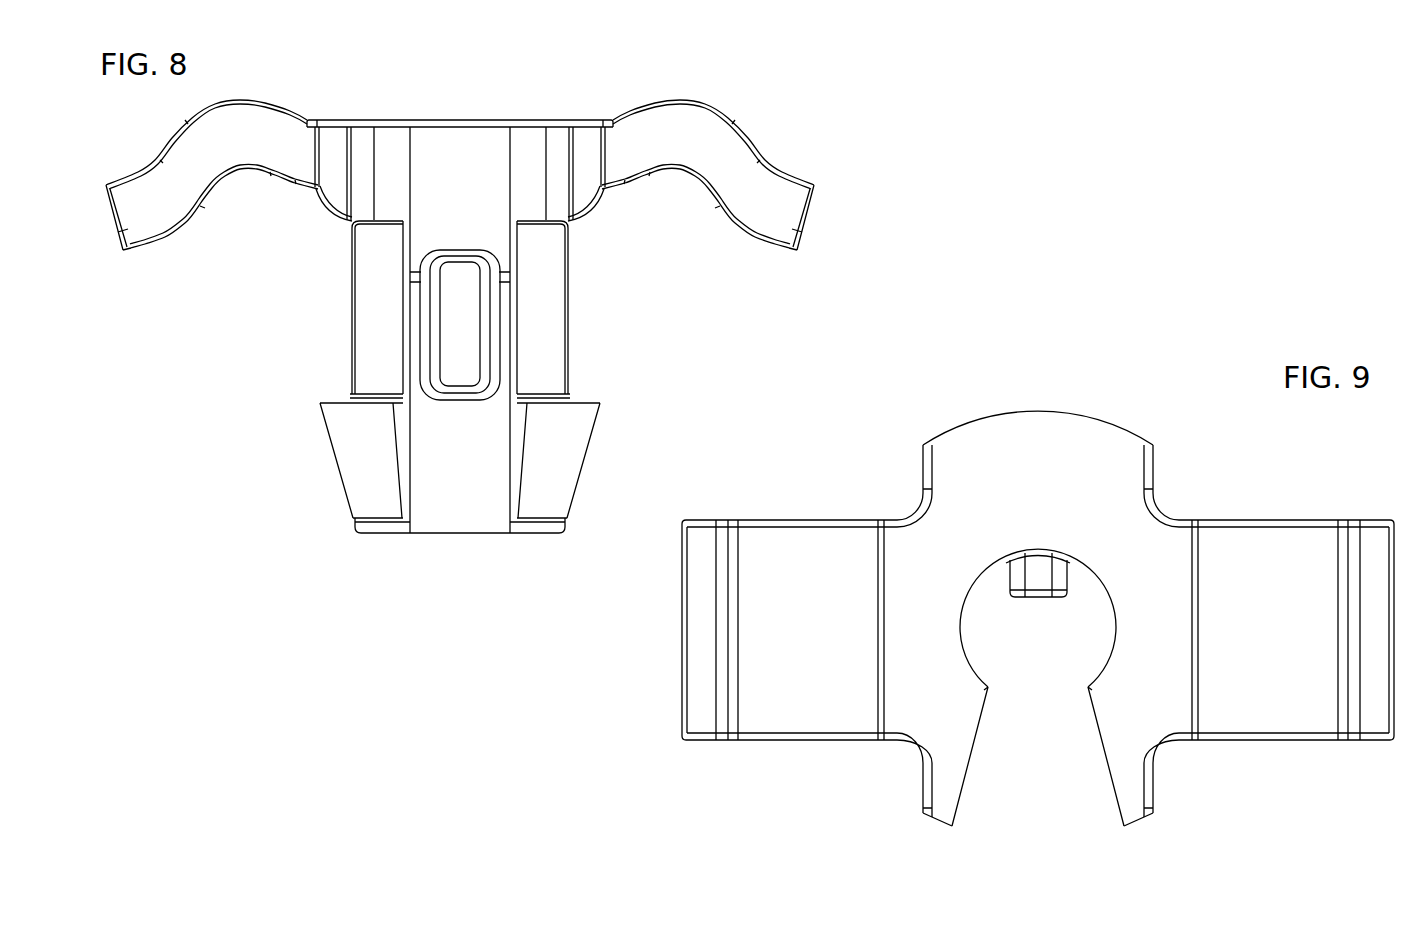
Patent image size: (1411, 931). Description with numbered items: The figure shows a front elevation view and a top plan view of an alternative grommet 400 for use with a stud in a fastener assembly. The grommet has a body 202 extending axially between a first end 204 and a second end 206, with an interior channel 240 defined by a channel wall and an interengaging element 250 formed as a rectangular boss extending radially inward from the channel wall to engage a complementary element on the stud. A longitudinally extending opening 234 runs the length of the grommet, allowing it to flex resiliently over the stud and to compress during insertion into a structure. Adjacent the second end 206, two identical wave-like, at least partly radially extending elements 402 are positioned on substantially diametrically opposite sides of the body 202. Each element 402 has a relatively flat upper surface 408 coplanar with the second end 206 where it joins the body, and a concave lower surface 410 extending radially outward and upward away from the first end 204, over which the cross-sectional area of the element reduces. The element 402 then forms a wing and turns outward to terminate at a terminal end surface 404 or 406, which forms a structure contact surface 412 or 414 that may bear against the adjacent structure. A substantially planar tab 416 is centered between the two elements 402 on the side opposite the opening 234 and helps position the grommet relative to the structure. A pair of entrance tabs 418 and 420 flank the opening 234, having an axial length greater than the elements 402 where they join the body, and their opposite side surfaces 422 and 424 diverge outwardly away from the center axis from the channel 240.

In FIG. 8, the grommet 400 is at (290, 85).
In FIG. 8, the at least partly radially extending element 402 is at (178, 108).
In FIG. 9, the at least partly radially extending element 402 is at (800, 495).
In FIG. 8, the terminal end surface 404 is at (108, 214).
In FIG. 8, the terminal end surface 406 is at (808, 228).
In FIG. 9, the terminal end surface 406 is at (903, 557).
In FIG. 8, the upper surface 408 is at (590, 118).
In FIG. 8, the lower surface 410 is at (592, 215).
In FIG. 8, the structure contact surface 412 is at (140, 256).
In FIG. 8, the structure contact surface 414 is at (772, 248).
In FIG. 8, the tab 416 is at (360, 190).
In FIG. 9, the tab 416 is at (1048, 404).
In FIG. 8, the entrance tab 418 is at (527, 150).
In FIG. 9, the entrance tab 418 is at (905, 790).
In FIG. 9, the entrance tab 420 is at (1172, 800).
In FIG. 9, the side surface 422 is at (960, 795).
In FIG. 9, the side surface 424 is at (1118, 800).
In FIG. 8, the body 202 is at (320, 322).
In FIG. 8, the first end 204 is at (537, 535).
In FIG. 8, the second end 206 is at (360, 116).
In FIG. 9, the opening 234 is at (1017, 795).
In FIG. 9, the channel 240 is at (1083, 607).
In FIG. 8, the interengaging element 250 is at (455, 368).
In FIG. 9, the interengaging element 250 is at (1037, 597).